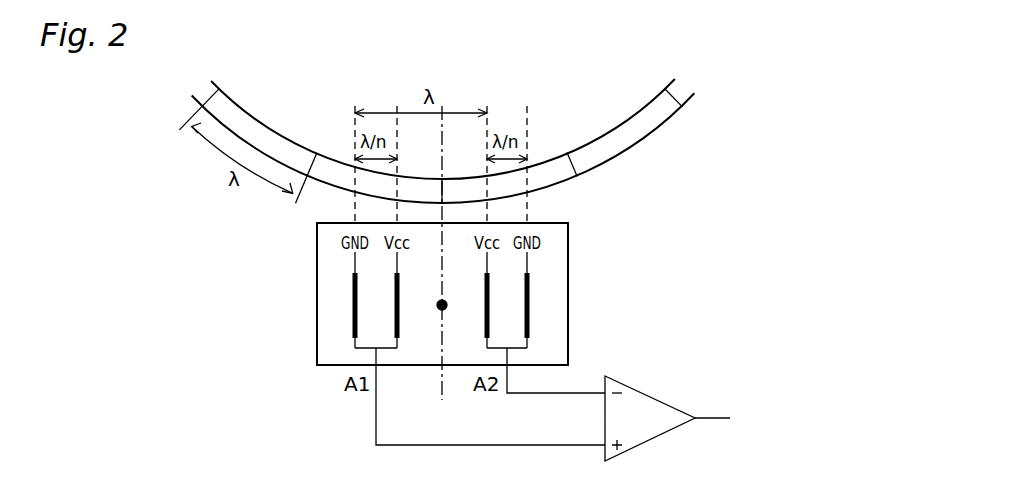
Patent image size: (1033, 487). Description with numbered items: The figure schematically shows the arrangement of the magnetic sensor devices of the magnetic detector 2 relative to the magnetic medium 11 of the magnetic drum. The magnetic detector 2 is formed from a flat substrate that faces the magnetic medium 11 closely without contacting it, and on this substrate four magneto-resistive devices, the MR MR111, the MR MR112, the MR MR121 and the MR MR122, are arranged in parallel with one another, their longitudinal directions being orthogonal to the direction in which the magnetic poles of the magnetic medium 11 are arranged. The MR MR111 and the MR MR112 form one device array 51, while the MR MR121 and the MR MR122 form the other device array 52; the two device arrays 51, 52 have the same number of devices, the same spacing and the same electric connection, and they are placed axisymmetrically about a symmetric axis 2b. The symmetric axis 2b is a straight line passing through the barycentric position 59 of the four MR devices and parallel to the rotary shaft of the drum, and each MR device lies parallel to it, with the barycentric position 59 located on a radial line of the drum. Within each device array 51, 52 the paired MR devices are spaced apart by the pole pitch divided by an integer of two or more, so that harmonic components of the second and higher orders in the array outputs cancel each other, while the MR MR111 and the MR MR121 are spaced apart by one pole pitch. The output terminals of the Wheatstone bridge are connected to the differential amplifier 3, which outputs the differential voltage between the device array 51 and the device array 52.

The magnetic medium 11 is at (633, 141).
The magnetic detector 2 is at (570, 353).
The symmetric axis 2b is at (447, 378).
The differential amplifier 3 is at (670, 432).
The device array 51 is at (333, 353).
The device array 52 is at (548, 355).
The barycentric position 59 is at (441, 312).
The MR device MR111 is at (355, 312).
The MR device MR112 is at (397, 293).
The MR device MR121 is at (487, 290).
The MR device MR122 is at (527, 313).